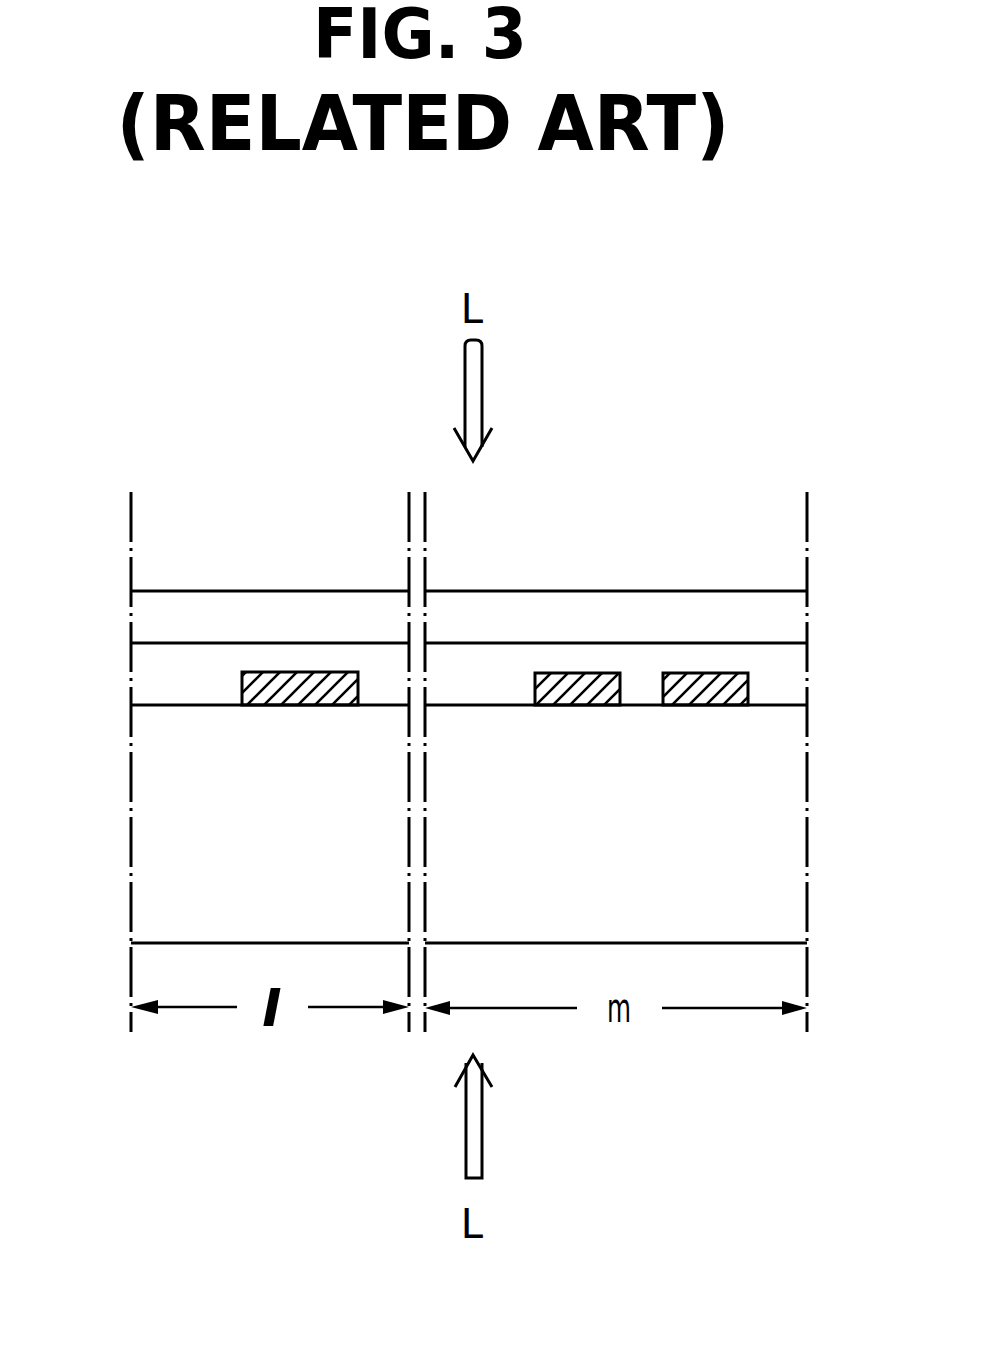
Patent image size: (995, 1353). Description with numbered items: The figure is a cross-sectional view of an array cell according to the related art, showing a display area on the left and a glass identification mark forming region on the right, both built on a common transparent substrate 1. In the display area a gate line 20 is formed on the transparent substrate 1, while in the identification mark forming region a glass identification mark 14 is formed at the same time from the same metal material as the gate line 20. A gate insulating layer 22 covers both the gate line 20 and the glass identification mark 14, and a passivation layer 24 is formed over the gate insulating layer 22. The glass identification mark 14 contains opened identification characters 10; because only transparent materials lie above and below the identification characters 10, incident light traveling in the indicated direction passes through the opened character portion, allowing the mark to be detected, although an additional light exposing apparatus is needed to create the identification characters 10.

The transparent substrate 1 is at (152, 878).
The identification characters 10 is at (640, 655).
The glass identification mark 14 is at (536, 705).
The gate line 20 is at (297, 706).
The gate insulating layer 22 is at (183, 653).
The passivation layer 24 is at (320, 607).